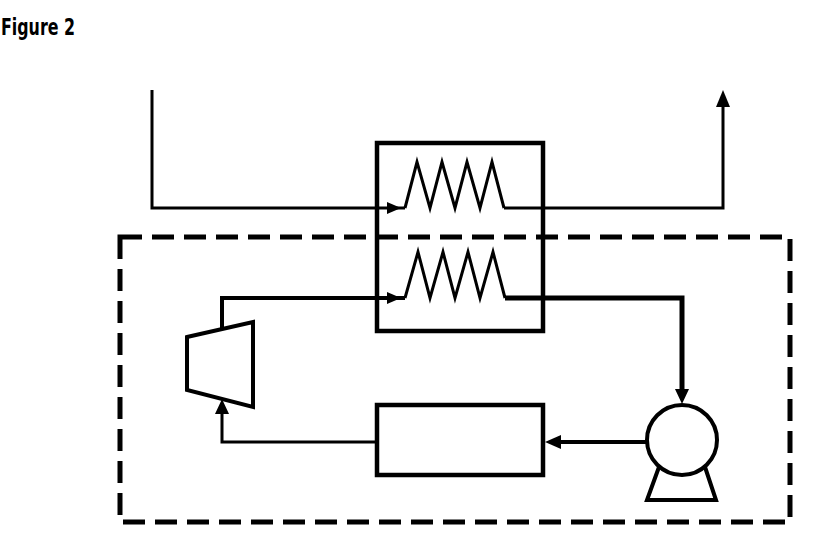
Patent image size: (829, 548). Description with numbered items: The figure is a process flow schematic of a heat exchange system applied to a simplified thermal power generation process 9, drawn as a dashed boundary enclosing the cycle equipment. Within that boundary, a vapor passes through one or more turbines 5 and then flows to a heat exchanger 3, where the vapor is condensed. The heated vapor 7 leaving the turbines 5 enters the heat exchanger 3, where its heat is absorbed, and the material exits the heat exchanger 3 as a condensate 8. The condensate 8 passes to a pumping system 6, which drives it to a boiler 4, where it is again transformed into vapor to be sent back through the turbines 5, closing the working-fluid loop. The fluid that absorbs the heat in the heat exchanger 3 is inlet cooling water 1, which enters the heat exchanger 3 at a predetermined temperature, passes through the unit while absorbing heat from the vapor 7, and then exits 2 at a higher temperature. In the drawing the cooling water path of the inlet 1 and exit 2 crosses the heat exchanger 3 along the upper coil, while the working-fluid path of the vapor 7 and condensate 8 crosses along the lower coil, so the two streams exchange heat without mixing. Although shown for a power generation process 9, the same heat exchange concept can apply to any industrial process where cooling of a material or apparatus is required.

The inlet cooling water 1 is at (278, 152).
The cooling water exit 2 is at (617, 149).
The heat exchanger 3 is at (460, 214).
The boiler 4 is at (379, 437).
The turbines 5 is at (220, 364).
The pumping system 6 is at (631, 452).
The heated vapor 7 is at (313, 315).
The condensate 8 is at (597, 351).
The thermal power generation process 9 is at (455, 379).